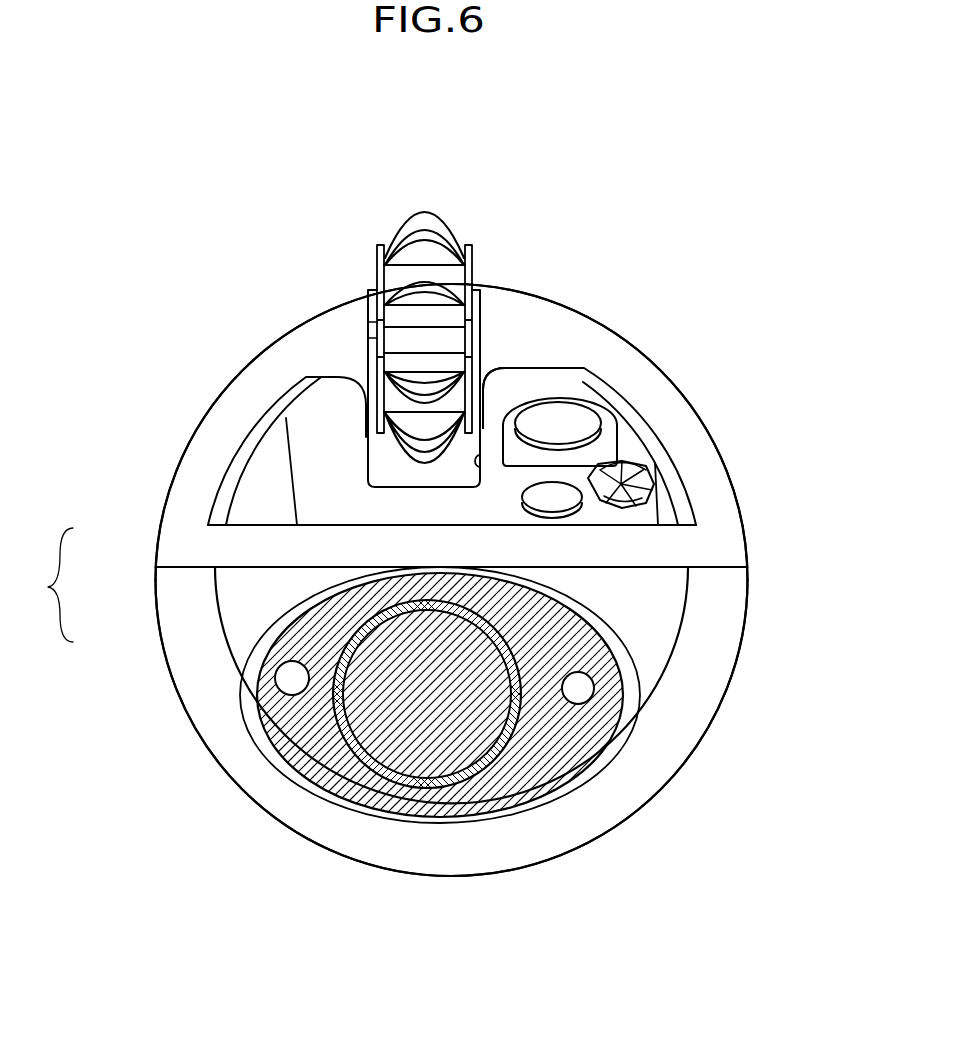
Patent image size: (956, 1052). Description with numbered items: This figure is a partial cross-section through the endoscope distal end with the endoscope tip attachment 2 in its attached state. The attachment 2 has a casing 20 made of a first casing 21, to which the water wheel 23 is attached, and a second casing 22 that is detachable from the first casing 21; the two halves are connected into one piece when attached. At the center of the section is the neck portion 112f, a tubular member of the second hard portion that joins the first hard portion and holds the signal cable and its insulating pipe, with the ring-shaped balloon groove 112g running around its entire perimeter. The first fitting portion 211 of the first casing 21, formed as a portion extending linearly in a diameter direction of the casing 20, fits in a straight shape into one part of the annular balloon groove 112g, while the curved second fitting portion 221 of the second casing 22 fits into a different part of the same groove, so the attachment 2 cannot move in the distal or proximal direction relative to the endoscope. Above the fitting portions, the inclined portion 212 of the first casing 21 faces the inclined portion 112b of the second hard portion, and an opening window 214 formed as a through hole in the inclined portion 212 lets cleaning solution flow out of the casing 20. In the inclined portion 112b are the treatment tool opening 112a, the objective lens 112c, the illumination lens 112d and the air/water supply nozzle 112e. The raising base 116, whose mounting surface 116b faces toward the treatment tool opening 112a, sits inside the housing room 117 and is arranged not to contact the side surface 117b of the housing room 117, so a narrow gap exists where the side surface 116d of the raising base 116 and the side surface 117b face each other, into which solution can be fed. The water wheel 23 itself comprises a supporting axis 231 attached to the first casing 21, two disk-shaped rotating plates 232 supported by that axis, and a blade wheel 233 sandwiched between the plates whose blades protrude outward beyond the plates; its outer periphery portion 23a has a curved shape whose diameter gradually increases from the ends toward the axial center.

The endoscope tip attachment 2 is at (706, 246).
The casing 20 is at (47, 585).
The first casing 21 is at (150, 537).
The second casing 22 is at (150, 611).
The first fitting portion 211 is at (657, 547).
The inclined portion 212 is at (708, 470).
The opening window 214 is at (267, 417).
The second fitting portion 221 is at (253, 735).
The water wheel 23 is at (418, 202).
The outer periphery portion 23a is at (443, 243).
The supporting axis 231 is at (373, 338).
The rotating plates 232 is at (473, 262).
The blade wheel 233 is at (429, 250).
The raising base 116 is at (427, 472).
The mounting surface 116b is at (425, 470).
The side surface 116d is at (373, 445).
The housing room 117 is at (490, 424).
The side surface 117b is at (567, 420).
The treatment tool opening 112a is at (417, 487).
The inclined portion 112b is at (313, 455).
The objective lens 112c is at (560, 495).
The illumination lens 112d is at (625, 470).
The air/water supply nozzle 112e is at (482, 447).
The neck portion 112f is at (562, 752).
The balloon groove 112g is at (637, 638).